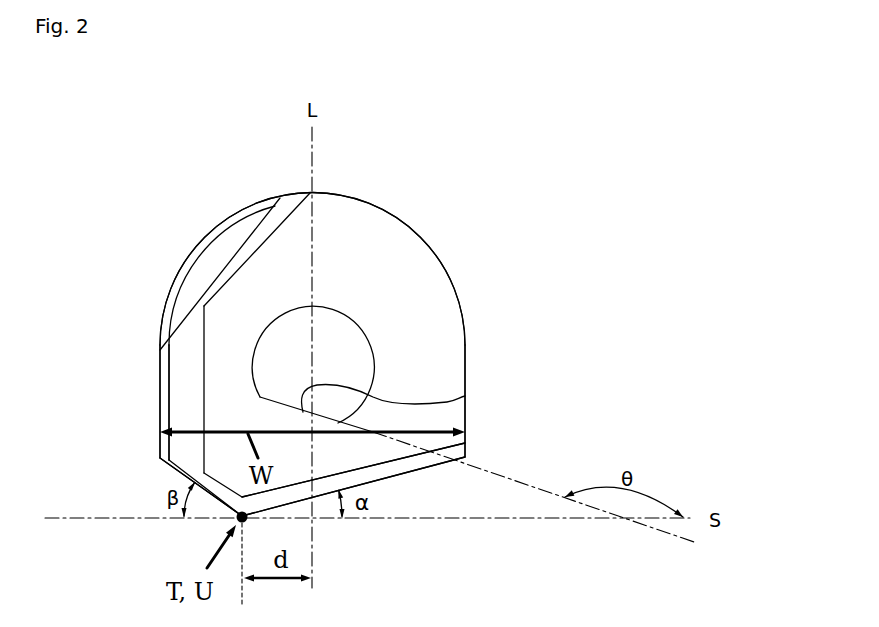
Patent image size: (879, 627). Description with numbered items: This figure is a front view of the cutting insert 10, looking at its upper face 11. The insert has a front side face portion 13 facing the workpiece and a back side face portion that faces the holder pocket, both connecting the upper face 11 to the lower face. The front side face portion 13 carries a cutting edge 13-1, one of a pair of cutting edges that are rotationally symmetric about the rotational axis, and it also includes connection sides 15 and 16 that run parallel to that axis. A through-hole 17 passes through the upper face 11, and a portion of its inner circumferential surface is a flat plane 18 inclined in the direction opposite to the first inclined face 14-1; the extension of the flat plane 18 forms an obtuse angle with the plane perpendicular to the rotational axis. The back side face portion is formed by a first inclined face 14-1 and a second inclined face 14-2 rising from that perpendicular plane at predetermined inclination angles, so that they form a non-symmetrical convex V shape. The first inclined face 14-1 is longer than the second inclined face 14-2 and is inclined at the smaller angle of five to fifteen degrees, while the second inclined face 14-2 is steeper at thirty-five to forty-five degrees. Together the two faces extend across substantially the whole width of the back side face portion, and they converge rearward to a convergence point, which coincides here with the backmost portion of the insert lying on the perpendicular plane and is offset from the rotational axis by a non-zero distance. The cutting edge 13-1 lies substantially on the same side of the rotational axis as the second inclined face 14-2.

The cutting insert 10 is at (505, 144).
The upper face 11 is at (378, 236).
The front side face portion 13 is at (290, 164).
The cutting edge 13-1 is at (209, 263).
The first inclined face 14-1 is at (398, 477).
The second inclined face 14-2 is at (172, 471).
The connection side 15 is at (160, 378).
The connection side 16 is at (465, 373).
The through-hole 17 is at (334, 355).
The flat plane 18 is at (465, 396).